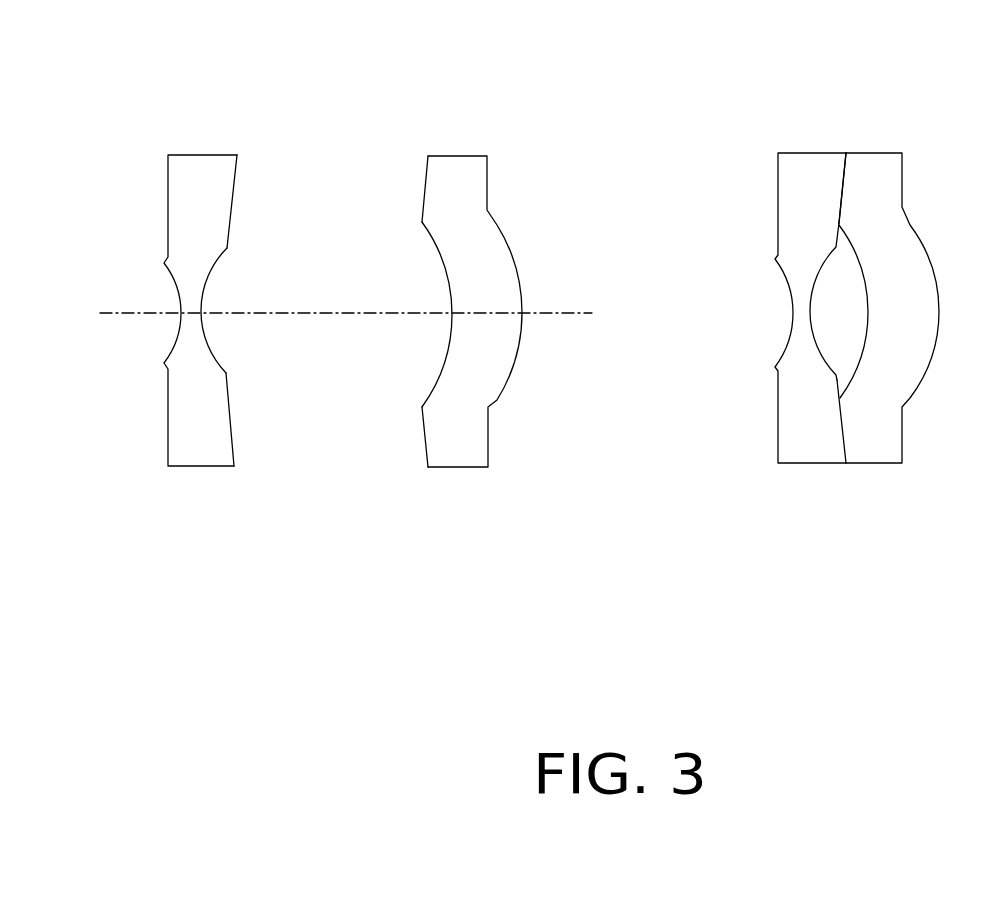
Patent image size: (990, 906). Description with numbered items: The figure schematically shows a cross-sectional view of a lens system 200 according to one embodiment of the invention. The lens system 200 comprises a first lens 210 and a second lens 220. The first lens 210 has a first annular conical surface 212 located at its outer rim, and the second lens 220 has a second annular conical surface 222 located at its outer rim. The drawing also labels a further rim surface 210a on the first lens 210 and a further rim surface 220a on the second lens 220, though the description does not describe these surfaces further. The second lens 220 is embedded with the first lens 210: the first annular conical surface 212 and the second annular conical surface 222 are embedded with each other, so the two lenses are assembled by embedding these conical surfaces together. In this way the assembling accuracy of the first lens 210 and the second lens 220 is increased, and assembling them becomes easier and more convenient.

The lens system 200 is at (568, 658).
The first lens 210 is at (197, 453).
The first annular conical surface 212 is at (233, 187).
The second inclined surface of first lens 210a is at (236, 452).
The second lens 220 is at (456, 455).
The second annular conical surface 222 is at (422, 188).
The second inclined surface of second lens 220a is at (426, 452).